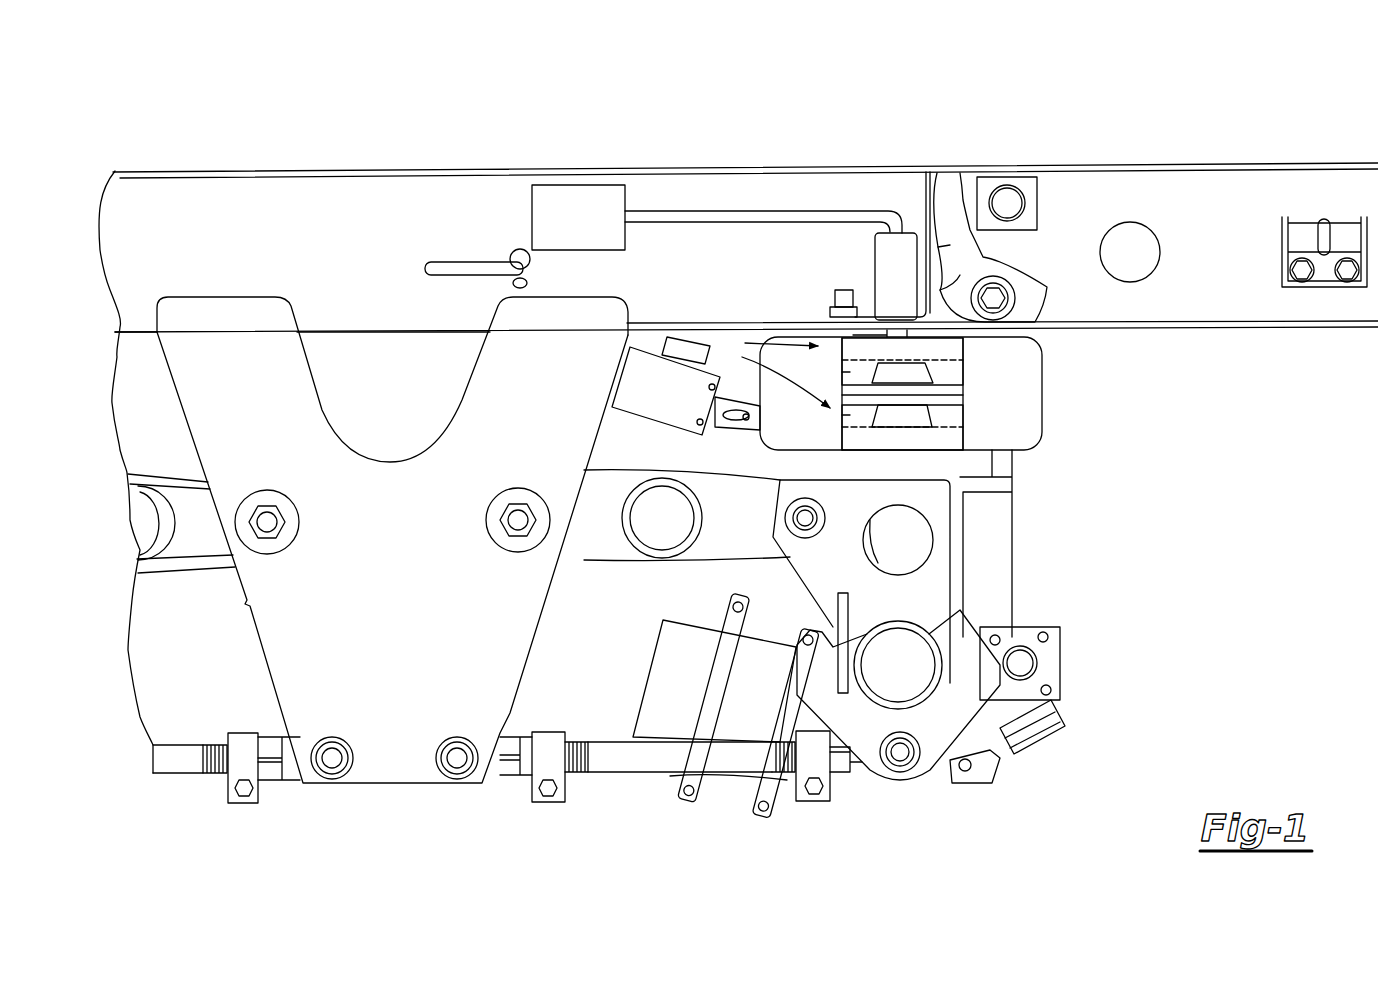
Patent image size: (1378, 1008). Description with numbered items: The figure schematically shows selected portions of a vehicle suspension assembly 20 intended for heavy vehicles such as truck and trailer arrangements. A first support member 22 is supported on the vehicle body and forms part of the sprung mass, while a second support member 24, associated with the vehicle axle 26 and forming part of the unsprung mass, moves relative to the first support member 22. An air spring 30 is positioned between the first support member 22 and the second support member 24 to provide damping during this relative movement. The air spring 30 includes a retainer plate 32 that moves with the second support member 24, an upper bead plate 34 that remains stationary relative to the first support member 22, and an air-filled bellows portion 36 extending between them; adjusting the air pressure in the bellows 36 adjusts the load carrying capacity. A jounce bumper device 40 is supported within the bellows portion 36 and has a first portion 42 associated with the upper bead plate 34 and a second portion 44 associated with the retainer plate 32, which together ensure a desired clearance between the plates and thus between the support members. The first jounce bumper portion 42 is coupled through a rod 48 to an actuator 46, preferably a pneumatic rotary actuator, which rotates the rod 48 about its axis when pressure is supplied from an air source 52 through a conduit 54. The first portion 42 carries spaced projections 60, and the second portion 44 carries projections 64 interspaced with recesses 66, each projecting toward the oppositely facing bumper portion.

The vehicle suspension assembly 20 is at (1017, 96).
The first support member 22 is at (1182, 320).
The second support member 24 is at (823, 572).
The vehicle axle 26 is at (886, 676).
The air spring 30 is at (1050, 438).
The retainer plate 32 is at (998, 468).
The upper bead plate 34 is at (1055, 295).
The bellows portion 36 is at (1035, 368).
The jounce bumper device 40 is at (772, 369).
The first jounce bumper portion 42 is at (963, 352).
The second jounce bumper portion 44 is at (963, 440).
The actuator 46 is at (878, 266).
The rod 48 is at (890, 333).
The air source 52 is at (590, 228).
The conduit 54 is at (668, 215).
The projections 60 is at (845, 381).
The projections 64 is at (907, 412).
The recesses 66 is at (845, 421).